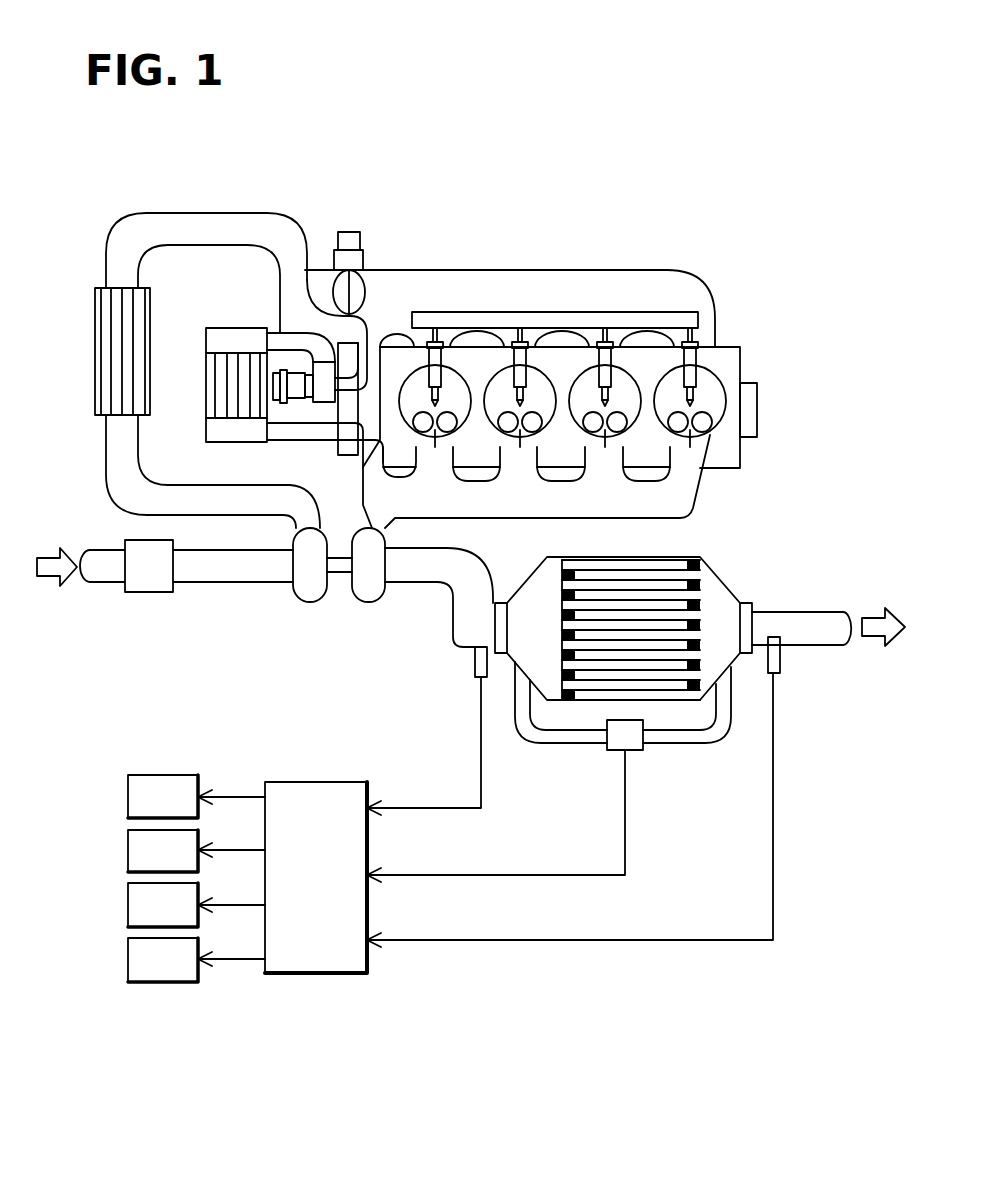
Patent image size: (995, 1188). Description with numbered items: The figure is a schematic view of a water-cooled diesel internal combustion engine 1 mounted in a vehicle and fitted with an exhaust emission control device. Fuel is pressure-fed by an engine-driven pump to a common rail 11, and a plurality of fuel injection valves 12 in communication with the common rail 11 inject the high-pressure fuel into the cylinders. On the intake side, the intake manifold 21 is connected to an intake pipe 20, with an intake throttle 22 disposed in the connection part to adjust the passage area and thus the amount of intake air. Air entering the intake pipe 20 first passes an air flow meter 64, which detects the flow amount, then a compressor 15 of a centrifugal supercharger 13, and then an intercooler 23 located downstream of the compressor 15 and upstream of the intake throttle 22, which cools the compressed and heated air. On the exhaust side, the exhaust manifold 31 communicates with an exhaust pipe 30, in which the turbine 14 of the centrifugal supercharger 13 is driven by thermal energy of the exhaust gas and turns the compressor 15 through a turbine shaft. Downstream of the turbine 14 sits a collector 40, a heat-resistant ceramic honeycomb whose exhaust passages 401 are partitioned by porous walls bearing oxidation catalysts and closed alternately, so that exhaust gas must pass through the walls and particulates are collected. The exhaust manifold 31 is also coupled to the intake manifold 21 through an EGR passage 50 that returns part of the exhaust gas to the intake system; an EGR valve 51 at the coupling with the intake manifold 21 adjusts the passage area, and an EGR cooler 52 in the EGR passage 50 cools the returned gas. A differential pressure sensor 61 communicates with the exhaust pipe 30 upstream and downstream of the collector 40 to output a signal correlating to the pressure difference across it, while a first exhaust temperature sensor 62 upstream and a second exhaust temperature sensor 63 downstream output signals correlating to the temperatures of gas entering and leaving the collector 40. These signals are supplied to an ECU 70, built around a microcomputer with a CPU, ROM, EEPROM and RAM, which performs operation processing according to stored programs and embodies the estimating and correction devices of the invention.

The internal combustion engine 1 is at (763, 374).
The common rail 11 is at (668, 316).
The fuel injection valves 12 is at (697, 360).
The centrifugal supercharger 13 is at (341, 612).
The turbine 14 is at (370, 596).
The compressor 15 is at (310, 602).
The intake pipe 20 is at (163, 212).
The intake manifold 21 is at (633, 270).
The intake throttle 22 is at (353, 292).
The intercooler 23 is at (115, 352).
The exhaust pipe 30 is at (430, 583).
The exhaust manifold 31 is at (683, 490).
The collector 40 is at (700, 608).
The exhaust passages 401 is at (643, 603).
The EGR passage 50 is at (277, 335).
The EGR valve 51 is at (298, 384).
The EGR cooler 52 is at (240, 407).
The differential pressure sensor 61 is at (637, 755).
The first exhaust temperature sensor 62 is at (472, 663).
The second exhaust temperature sensor 63 is at (782, 662).
The air flow meter 64 is at (147, 593).
The ECU 70 is at (311, 782).